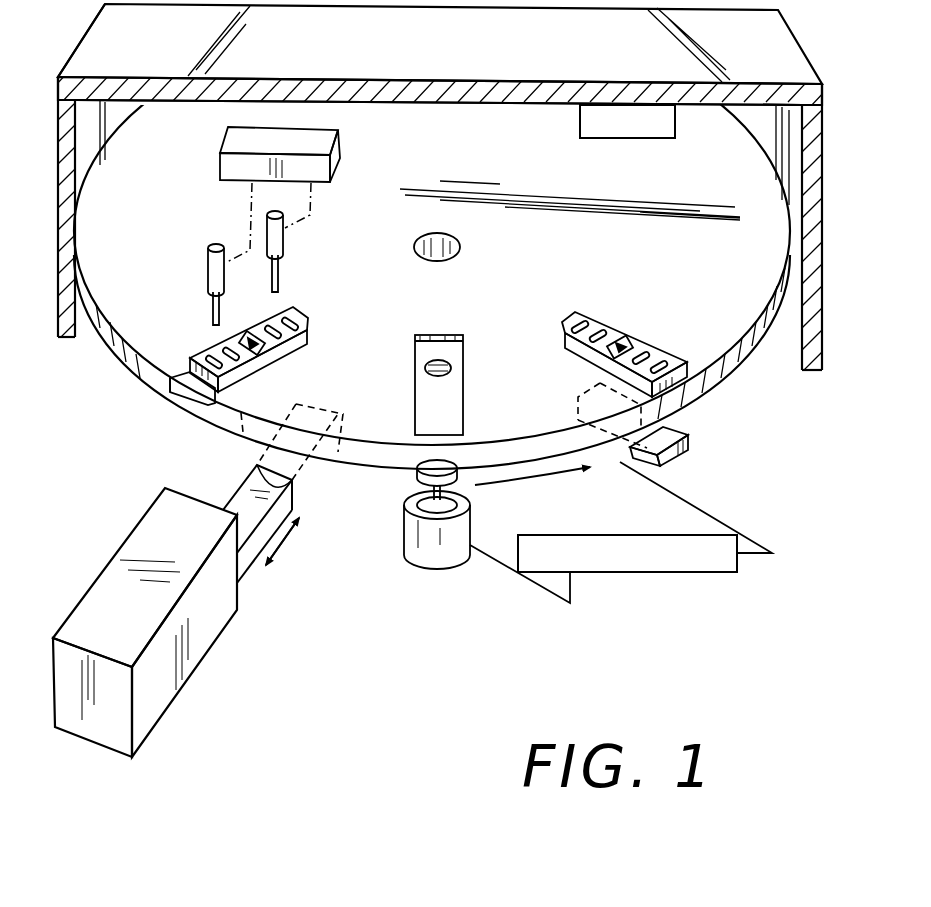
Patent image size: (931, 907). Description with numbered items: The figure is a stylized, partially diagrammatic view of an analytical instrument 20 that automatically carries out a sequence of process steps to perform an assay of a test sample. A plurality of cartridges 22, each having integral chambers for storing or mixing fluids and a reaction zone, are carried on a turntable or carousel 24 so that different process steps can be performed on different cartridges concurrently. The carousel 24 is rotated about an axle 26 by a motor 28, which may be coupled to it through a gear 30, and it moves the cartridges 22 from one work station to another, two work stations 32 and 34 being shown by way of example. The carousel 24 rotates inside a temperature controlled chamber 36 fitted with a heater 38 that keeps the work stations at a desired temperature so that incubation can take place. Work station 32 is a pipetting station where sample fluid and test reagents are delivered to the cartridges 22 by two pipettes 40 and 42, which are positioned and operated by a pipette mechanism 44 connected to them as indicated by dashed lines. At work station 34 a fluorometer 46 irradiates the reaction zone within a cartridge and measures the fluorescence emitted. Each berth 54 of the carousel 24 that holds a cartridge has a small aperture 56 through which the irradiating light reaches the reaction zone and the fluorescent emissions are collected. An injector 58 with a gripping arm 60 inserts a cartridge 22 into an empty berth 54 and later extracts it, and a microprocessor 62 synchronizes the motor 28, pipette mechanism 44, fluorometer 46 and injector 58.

The analytical instrument 20 is at (85, 350).
The cartridges 22 is at (270, 353).
The carousel 24 is at (128, 355).
The axle 26 is at (462, 247).
The motor 28 is at (405, 538).
The gear 30 is at (420, 482).
The work station 32 is at (126, 397).
The work station 34 is at (717, 474).
The temperature controlled chamber 36 is at (425, 107).
The heater 38 is at (655, 138).
The pipette 40 is at (208, 262).
The pipette 42 is at (283, 238).
The pipette mechanism 44 is at (340, 160).
The fluorometer 46 is at (692, 441).
The berth 54 is at (418, 347).
The aperture 56 is at (424, 370).
The injector 58 is at (165, 680).
The arm 60 is at (243, 572).
The microprocessor 62 is at (630, 573).